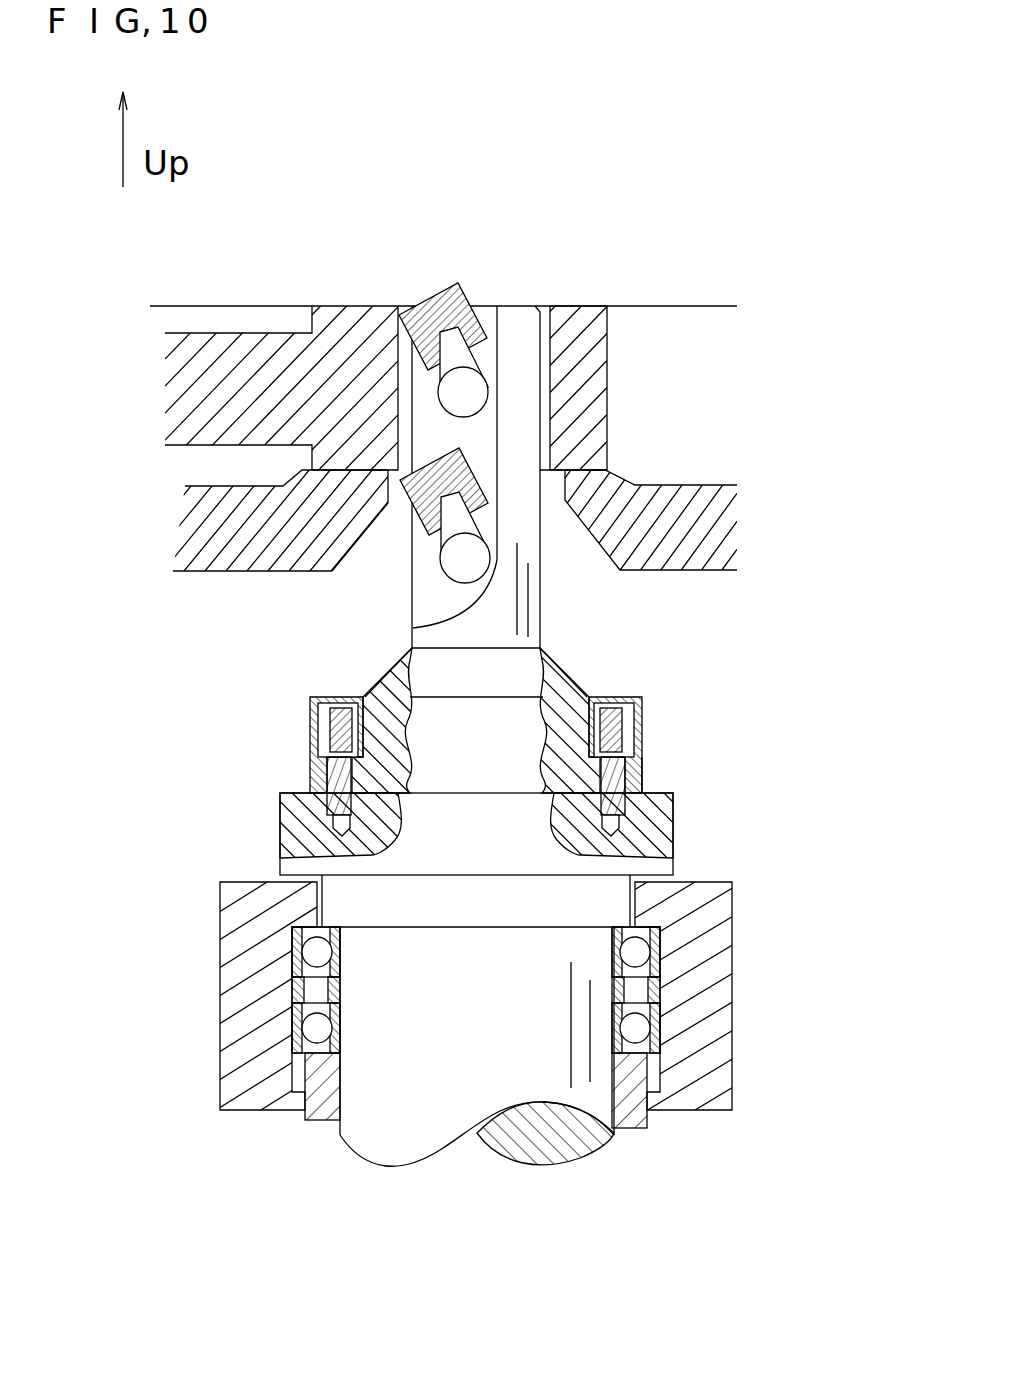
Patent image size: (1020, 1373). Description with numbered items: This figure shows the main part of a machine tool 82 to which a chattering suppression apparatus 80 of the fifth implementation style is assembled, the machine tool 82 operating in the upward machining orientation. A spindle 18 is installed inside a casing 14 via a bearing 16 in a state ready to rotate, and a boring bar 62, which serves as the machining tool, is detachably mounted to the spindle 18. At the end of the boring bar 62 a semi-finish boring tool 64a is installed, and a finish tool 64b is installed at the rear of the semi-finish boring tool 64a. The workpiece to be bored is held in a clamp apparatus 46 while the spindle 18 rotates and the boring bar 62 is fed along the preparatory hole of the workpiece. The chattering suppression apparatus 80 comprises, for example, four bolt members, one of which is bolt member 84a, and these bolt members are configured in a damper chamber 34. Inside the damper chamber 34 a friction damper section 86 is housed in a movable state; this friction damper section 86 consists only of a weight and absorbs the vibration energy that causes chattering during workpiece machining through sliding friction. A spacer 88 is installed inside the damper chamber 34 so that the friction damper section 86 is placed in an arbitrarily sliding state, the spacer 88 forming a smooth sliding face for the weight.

The casing 14 is at (233, 995).
The bearing 16 is at (642, 955).
The spindle 18 is at (393, 1133).
The damper chamber 34 is at (330, 697).
The clamp apparatus 46 is at (223, 560).
The boring bar 62 is at (541, 617).
The semi-finish boring tool 64a is at (430, 297).
The finish tool 64b is at (428, 512).
The chattering suppression apparatus 80 is at (642, 720).
The machine tool 82 is at (125, 912).
The bolt member 84a is at (628, 743).
The friction damper section 86 is at (322, 745).
The spacer 88 is at (643, 767).